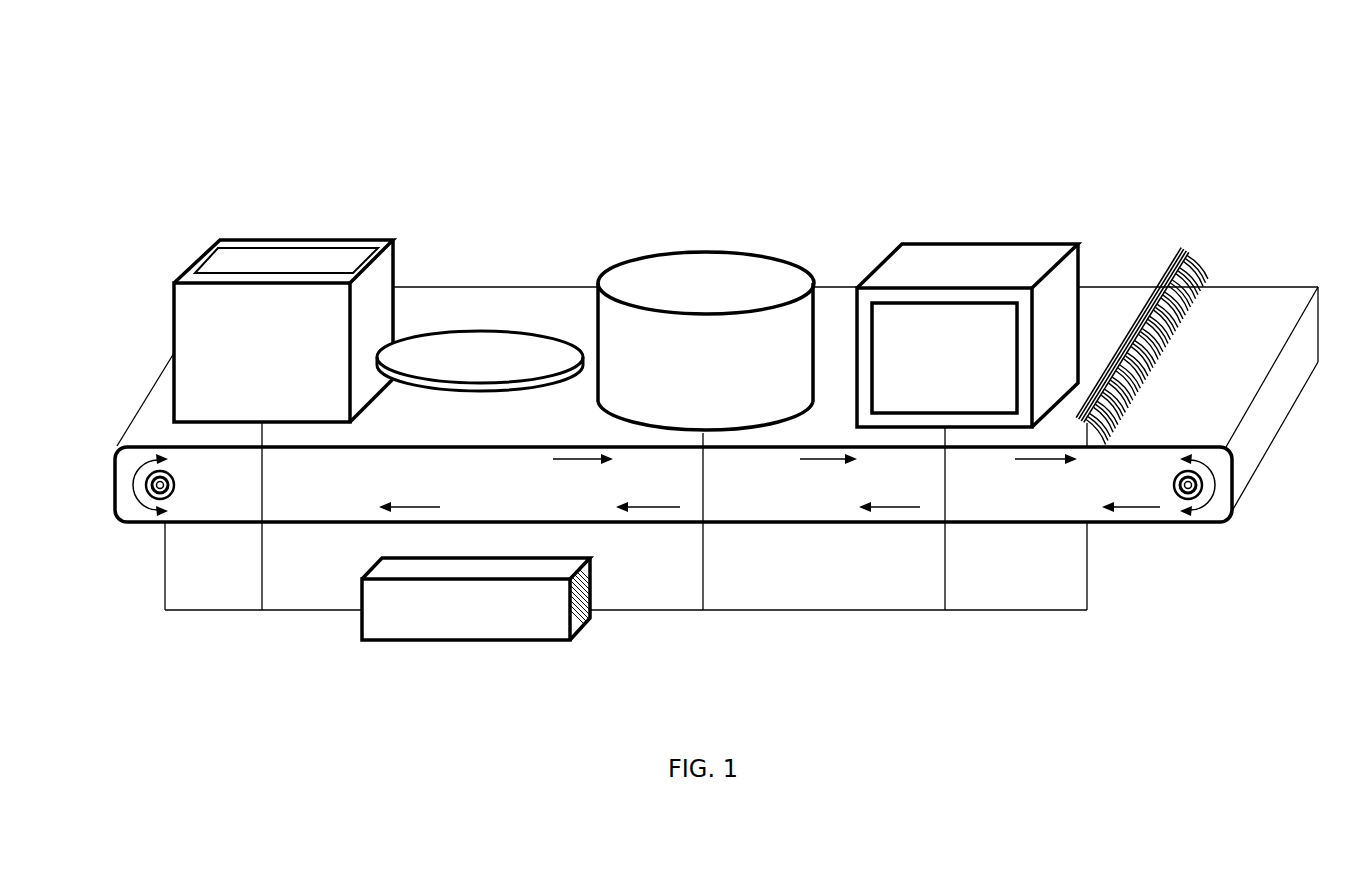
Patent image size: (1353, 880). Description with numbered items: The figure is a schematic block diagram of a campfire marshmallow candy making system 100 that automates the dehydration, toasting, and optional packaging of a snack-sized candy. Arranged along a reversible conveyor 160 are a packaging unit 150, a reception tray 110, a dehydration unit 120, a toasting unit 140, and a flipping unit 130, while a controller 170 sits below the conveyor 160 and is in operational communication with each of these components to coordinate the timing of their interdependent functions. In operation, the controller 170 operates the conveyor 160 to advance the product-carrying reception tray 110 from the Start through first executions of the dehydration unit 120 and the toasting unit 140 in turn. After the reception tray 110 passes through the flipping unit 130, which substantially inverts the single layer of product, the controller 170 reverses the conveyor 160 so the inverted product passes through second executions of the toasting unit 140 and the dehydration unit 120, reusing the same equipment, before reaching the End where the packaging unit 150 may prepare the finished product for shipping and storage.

The campfire marshmallow candy making system 100 is at (1062, 78).
The reception tray 110 is at (477, 330).
The dehydration unit 120 is at (703, 248).
The flipping unit 130 is at (1183, 248).
The toasting unit 140 is at (968, 242).
The packaging unit 150 is at (267, 235).
The conveyor 160 is at (1148, 524).
The controller 170 is at (467, 642).